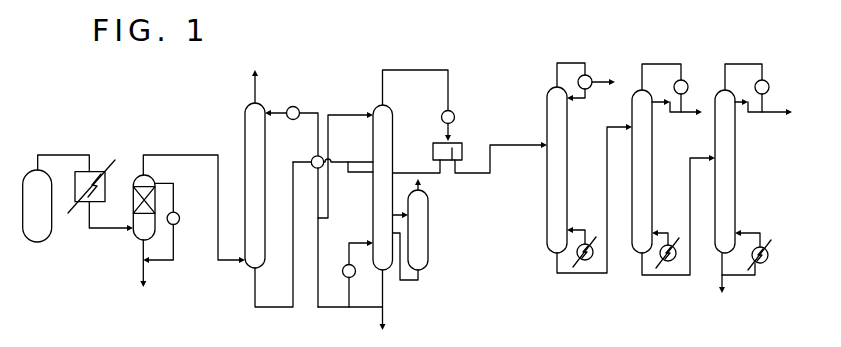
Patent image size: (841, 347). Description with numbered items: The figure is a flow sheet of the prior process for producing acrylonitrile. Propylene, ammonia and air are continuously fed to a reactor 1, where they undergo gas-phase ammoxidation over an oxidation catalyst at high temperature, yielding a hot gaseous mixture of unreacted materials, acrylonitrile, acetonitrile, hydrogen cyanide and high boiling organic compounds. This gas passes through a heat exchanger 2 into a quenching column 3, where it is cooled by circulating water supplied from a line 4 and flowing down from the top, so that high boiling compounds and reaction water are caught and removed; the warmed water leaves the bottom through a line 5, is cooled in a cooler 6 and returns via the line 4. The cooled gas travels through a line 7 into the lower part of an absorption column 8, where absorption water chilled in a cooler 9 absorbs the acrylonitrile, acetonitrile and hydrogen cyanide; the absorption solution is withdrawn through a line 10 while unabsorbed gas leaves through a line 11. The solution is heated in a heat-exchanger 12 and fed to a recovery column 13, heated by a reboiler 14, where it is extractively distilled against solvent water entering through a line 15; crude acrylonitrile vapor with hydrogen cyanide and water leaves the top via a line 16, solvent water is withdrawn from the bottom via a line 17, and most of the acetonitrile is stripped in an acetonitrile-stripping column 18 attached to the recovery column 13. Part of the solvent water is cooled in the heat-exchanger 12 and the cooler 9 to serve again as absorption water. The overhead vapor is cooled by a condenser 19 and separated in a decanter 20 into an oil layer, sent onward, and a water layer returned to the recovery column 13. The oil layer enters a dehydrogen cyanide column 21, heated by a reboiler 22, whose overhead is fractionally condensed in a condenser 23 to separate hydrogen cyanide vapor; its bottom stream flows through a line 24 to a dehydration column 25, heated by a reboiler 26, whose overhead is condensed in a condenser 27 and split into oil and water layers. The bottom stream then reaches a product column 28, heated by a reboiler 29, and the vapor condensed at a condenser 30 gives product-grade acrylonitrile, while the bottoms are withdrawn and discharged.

The reactor 1 is at (36, 175).
The heat exchanger 2 is at (75, 190).
The quenching column 3 is at (133, 203).
The line 4 is at (159, 185).
The line 5 is at (143, 258).
The cooler 6 is at (180, 218).
The line 7 is at (200, 155).
The absorption column 8 is at (258, 227).
The cooler 9 is at (293, 106).
The line 10 is at (255, 307).
The line 11 is at (255, 91).
The heat-exchanger 12 is at (312, 158).
The recovery column 13 is at (373, 208).
The reboiler 14 is at (343, 270).
The line 15 is at (357, 113).
The line 16 is at (427, 70).
The line 17 is at (318, 307).
The acetonitrile-stripping column 18 is at (420, 233).
The condenser 19 is at (455, 117).
The decanter 20 is at (440, 151).
The dehydrogen cyanide column 21 is at (547, 214).
The reboiler 22 is at (583, 270).
The condenser 23 is at (589, 78).
The line 24 is at (607, 195).
The dehydration column 25 is at (645, 200).
The reboiler 26 is at (664, 270).
The condenser 27 is at (684, 80).
The product column 28 is at (727, 200).
The reboiler 29 is at (757, 270).
The condenser 30 is at (764, 81).